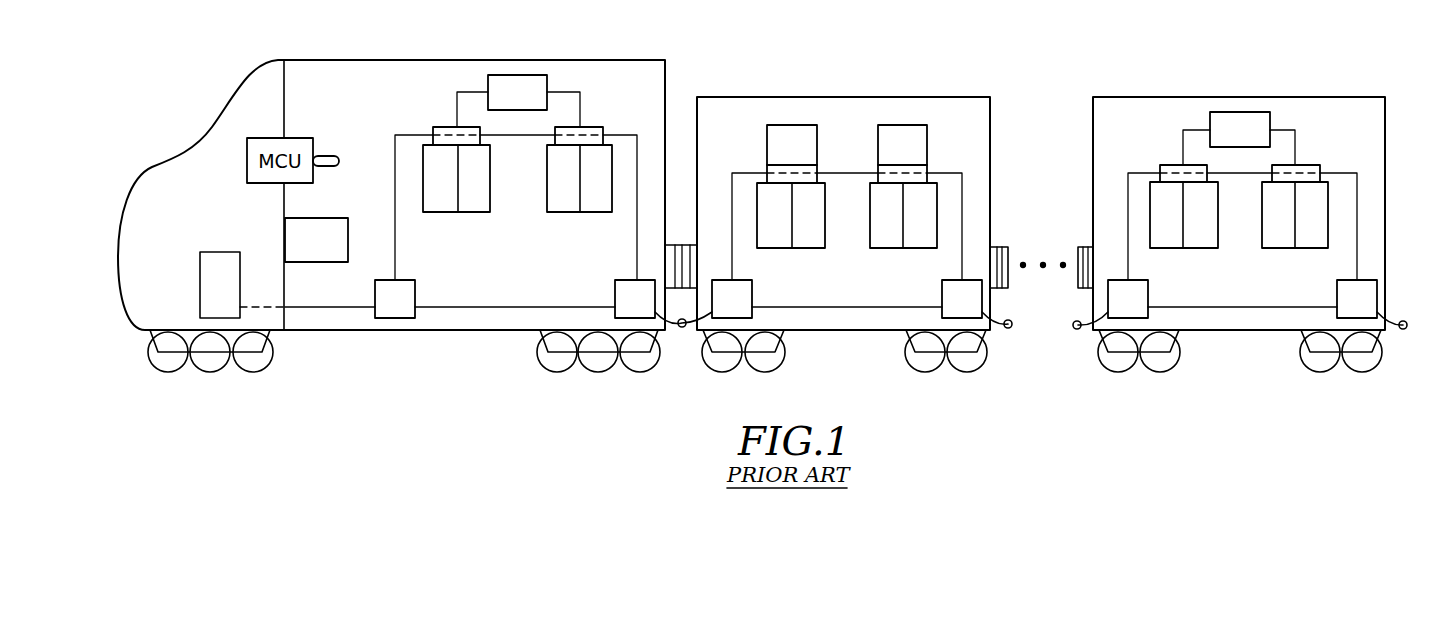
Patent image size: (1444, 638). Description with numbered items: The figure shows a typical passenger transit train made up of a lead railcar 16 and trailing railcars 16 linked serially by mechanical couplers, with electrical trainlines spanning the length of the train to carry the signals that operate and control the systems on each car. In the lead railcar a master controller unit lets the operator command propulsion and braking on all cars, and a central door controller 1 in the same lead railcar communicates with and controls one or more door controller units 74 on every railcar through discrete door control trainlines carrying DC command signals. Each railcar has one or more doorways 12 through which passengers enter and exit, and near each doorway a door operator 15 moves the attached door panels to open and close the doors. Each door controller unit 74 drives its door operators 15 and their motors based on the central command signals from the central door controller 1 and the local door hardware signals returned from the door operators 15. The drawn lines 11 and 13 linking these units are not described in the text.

The central door controller 1 is at (313, 262).
The train line connecting relays R 11 is at (492, 307).
The doorway 12 is at (453, 187).
The communication bus line 13 is at (515, 135).
The door operator 15 is at (445, 127).
The railcar 16 is at (362, 60).
The door controller unit 74 is at (524, 75).